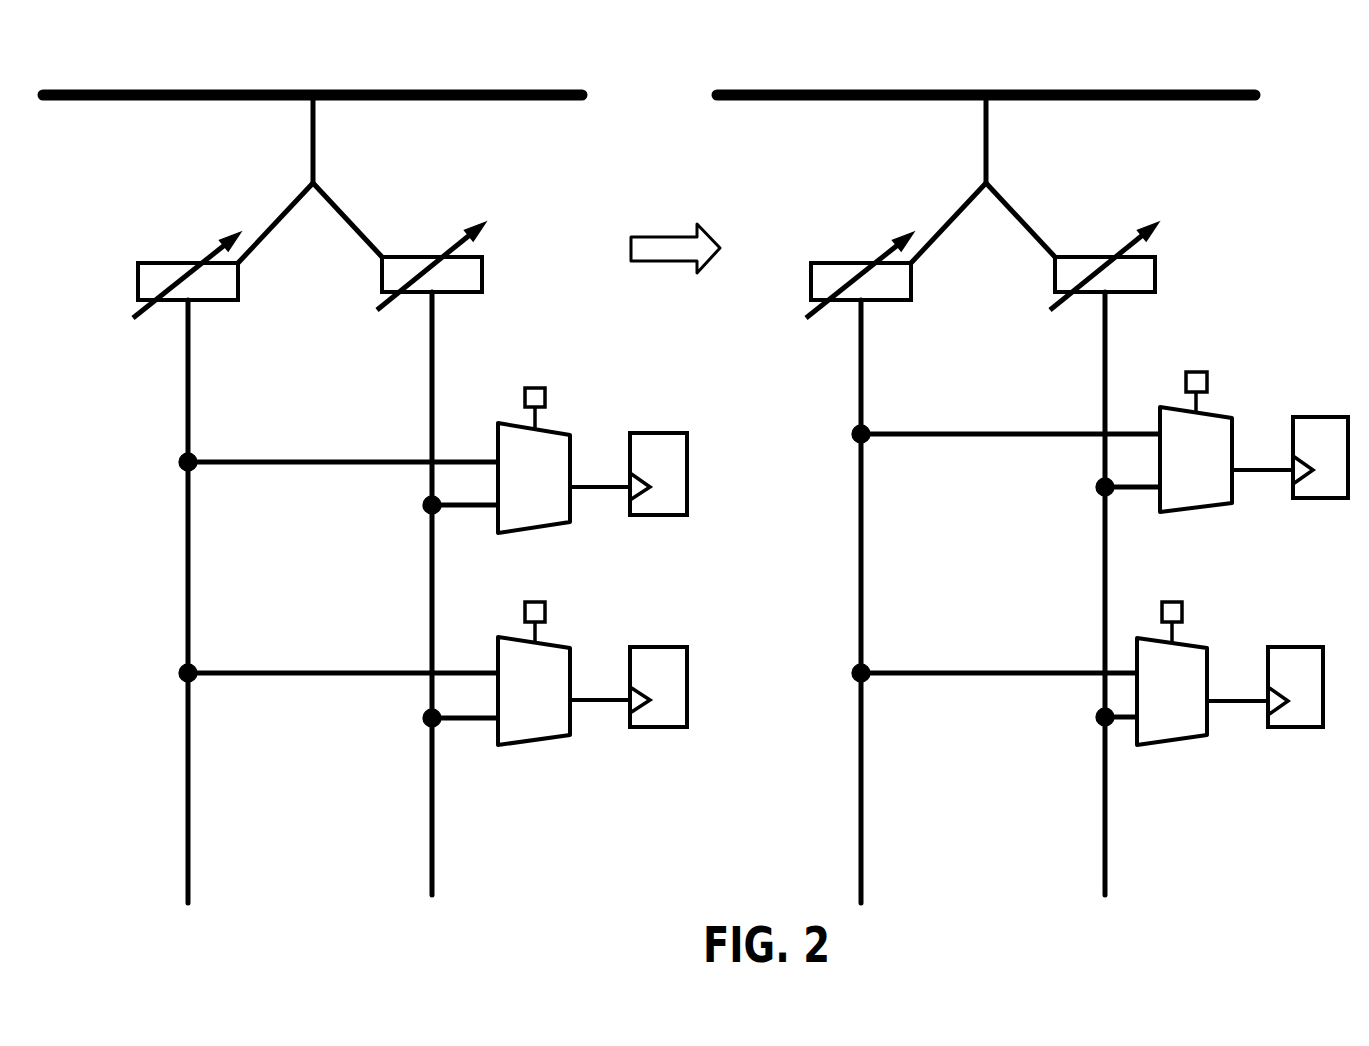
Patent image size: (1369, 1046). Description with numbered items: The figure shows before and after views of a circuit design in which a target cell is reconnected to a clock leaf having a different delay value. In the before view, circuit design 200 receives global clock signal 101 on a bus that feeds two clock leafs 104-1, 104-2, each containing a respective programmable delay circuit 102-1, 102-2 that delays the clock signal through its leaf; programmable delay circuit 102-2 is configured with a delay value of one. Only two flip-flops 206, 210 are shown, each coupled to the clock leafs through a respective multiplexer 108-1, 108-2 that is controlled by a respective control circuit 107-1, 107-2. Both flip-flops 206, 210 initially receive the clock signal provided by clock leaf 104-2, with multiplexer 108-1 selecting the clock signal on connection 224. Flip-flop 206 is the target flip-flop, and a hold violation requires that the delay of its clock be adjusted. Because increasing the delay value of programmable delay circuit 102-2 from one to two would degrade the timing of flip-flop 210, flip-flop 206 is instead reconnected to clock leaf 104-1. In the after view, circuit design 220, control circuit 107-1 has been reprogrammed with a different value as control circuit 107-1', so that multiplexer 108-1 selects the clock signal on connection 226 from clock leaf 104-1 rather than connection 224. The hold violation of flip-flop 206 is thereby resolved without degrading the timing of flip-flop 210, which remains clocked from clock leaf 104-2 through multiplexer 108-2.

The global clock signal 101 is at (649, 69).
The programmable delay circuit 102-1 is at (497, 250).
The programmable delay circuit 102-2 is at (828, 251).
The clock leaf 104-1 is at (470, 601).
The clock leaf 104-2 is at (765, 593).
The control circuit 107-1 is at (571, 388).
The control circuit 107-1' is at (1234, 371).
The control circuit 107-2 is at (888, 593).
The multiplexer 108-1 is at (896, 553).
The multiplexer 108-2 is at (565, 669).
The flip-flop 206 is at (995, 446).
The flip-flop 210 is at (988, 659).
The connection 224 is at (801, 602).
The connection 226 is at (674, 553).
The circuit design 200 is at (337, 506).
The circuit design 220 is at (962, 488).